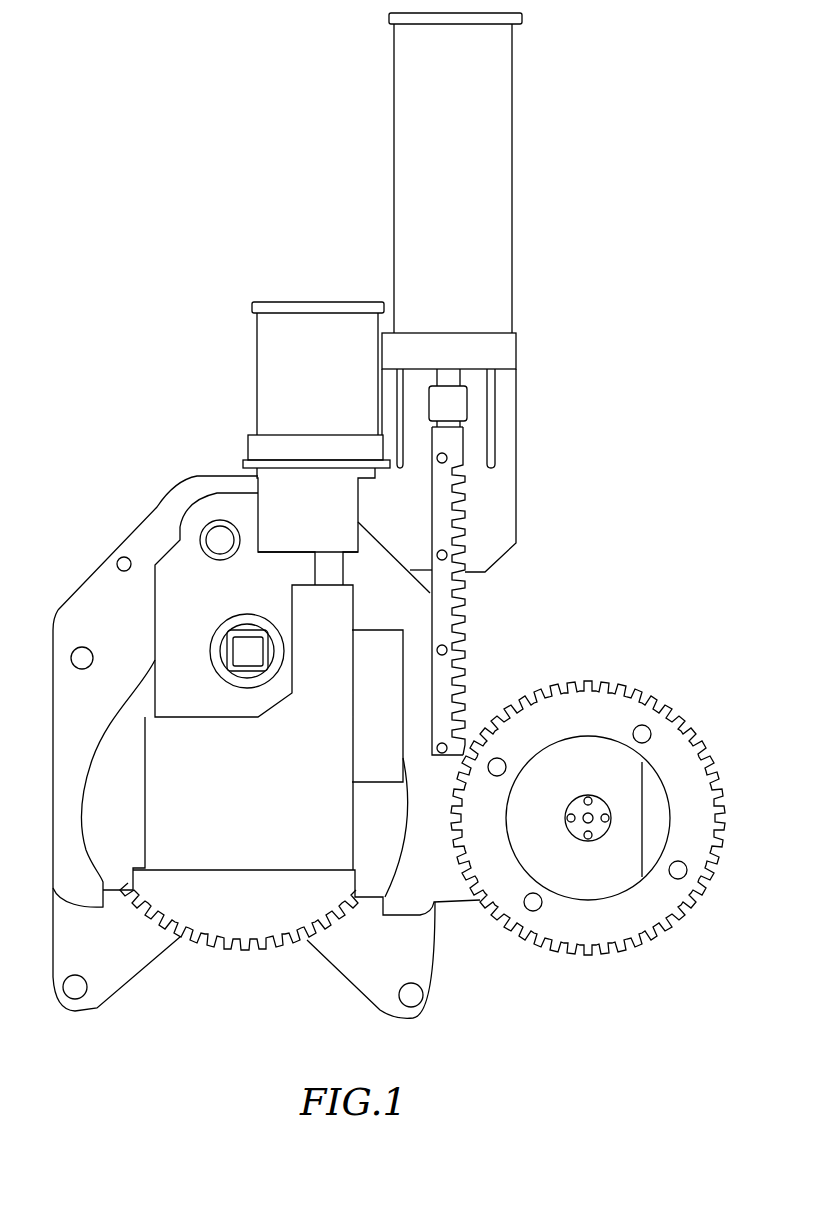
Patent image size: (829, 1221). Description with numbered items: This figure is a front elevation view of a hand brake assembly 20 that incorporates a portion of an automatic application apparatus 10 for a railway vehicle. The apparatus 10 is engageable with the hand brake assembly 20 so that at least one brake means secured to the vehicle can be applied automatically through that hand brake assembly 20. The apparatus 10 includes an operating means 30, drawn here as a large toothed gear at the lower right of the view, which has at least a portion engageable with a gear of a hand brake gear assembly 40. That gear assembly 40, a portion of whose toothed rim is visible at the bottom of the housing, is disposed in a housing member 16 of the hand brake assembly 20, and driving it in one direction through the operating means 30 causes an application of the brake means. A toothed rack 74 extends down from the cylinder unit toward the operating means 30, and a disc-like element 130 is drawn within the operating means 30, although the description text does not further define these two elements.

The apparatus 10 is at (600, 400).
The housing member 16 is at (82, 596).
The hand brake assembly 20 is at (138, 510).
The operating means 30 is at (612, 791).
The hand brake gear assembly 40 is at (238, 960).
The rack 74 is at (470, 627).
The gear hub disc 130 is at (697, 768).